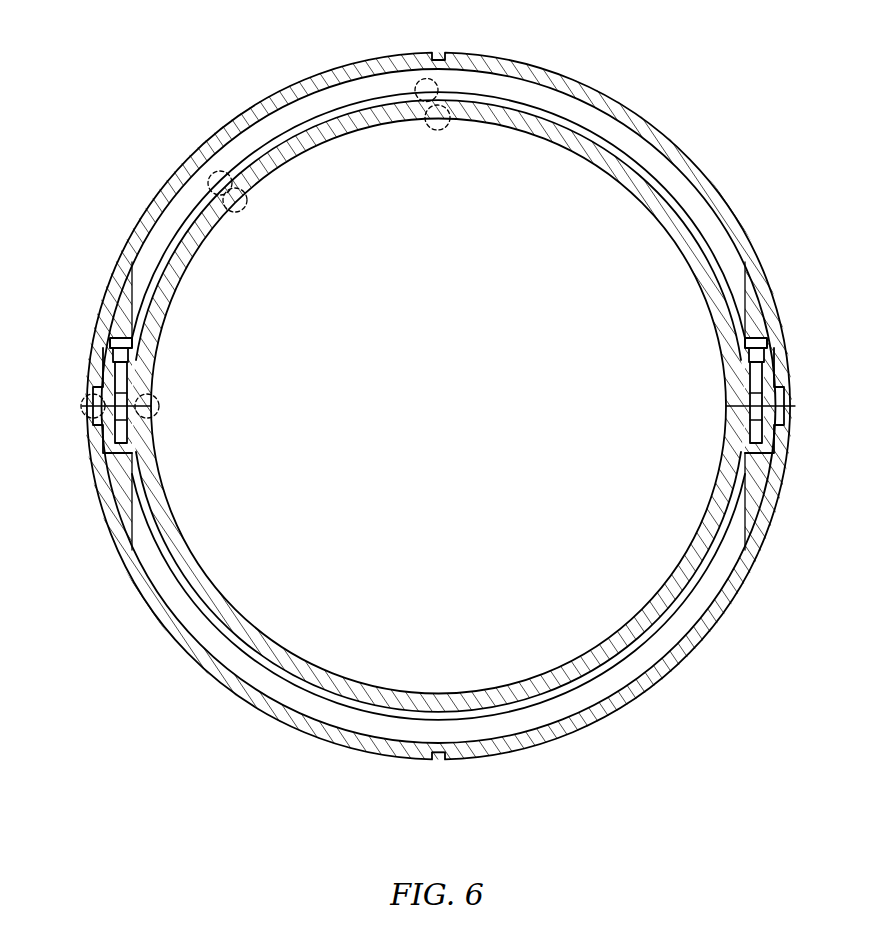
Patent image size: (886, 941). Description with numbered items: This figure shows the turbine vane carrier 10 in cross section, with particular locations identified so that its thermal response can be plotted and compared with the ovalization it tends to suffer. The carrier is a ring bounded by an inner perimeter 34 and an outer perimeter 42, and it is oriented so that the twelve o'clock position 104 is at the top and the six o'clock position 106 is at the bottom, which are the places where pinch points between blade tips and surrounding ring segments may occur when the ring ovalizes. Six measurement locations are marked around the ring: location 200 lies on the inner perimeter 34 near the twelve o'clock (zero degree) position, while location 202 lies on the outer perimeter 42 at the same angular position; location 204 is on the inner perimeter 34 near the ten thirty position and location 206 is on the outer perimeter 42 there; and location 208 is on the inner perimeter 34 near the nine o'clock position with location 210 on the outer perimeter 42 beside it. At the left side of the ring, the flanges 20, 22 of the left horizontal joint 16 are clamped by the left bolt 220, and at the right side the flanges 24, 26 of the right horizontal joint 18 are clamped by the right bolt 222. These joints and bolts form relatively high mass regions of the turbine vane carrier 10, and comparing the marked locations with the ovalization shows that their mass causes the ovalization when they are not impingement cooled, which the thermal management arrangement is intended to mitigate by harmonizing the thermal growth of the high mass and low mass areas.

The turbine vane carrier 10 is at (632, 180).
The left horizontal joint 16 is at (78, 410).
The right horizontal joint 18 is at (800, 410).
The flange 20 is at (117, 368).
The flange 22 is at (108, 430).
The flange 24 is at (780, 392).
The flange 26 is at (770, 430).
The inner perimeter 34 is at (284, 168).
The outer perimeter 42 is at (308, 125).
The twelve o'clock position 104 is at (419, 35).
The six o'clock position 106 is at (419, 807).
The location 200 is at (446, 128).
The location 202 is at (418, 80).
The location 204 is at (247, 210).
The location 206 is at (210, 173).
The location 208 is at (160, 406).
The location 210 is at (98, 390).
The left bolt 220 is at (128, 340).
The right bolt 222 is at (757, 340).